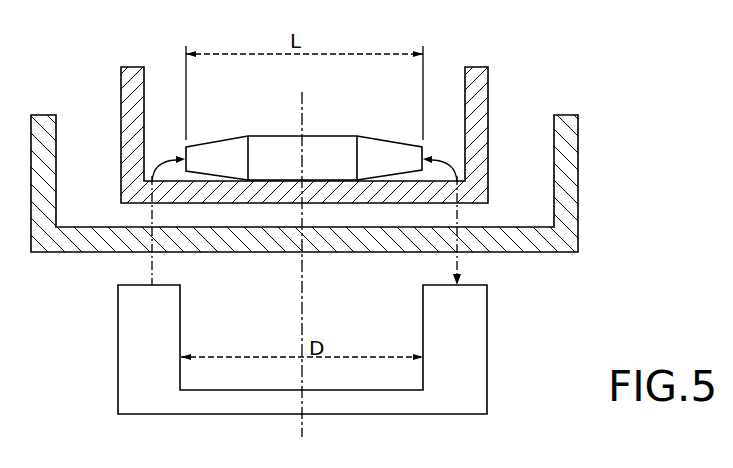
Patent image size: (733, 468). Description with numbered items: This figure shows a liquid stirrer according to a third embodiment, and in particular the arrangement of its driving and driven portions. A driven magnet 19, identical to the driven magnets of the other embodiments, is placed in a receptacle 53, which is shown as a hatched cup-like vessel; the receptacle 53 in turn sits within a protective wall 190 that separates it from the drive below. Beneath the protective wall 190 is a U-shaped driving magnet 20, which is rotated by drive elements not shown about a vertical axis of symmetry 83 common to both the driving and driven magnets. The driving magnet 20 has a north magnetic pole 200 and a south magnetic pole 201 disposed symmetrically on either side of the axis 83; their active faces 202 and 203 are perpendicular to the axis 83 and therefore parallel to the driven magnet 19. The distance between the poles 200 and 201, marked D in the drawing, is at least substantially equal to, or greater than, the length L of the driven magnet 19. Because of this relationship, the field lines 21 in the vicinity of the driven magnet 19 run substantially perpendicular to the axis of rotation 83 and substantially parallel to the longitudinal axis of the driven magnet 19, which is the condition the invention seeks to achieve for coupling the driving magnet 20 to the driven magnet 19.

The driven magnet 19 is at (357, 128).
The U-shaped driving magnet 20 is at (525, 346).
The field lines 21 is at (156, 160).
The receptacle 53 is at (490, 81).
The vertical axis of symmetry 83 is at (302, 113).
The protective wall 190 is at (568, 172).
The north magnetic pole 200 is at (125, 340).
The south magnetic pole 201 is at (491, 325).
The active face 202 is at (138, 284).
The active face 203 is at (436, 284).